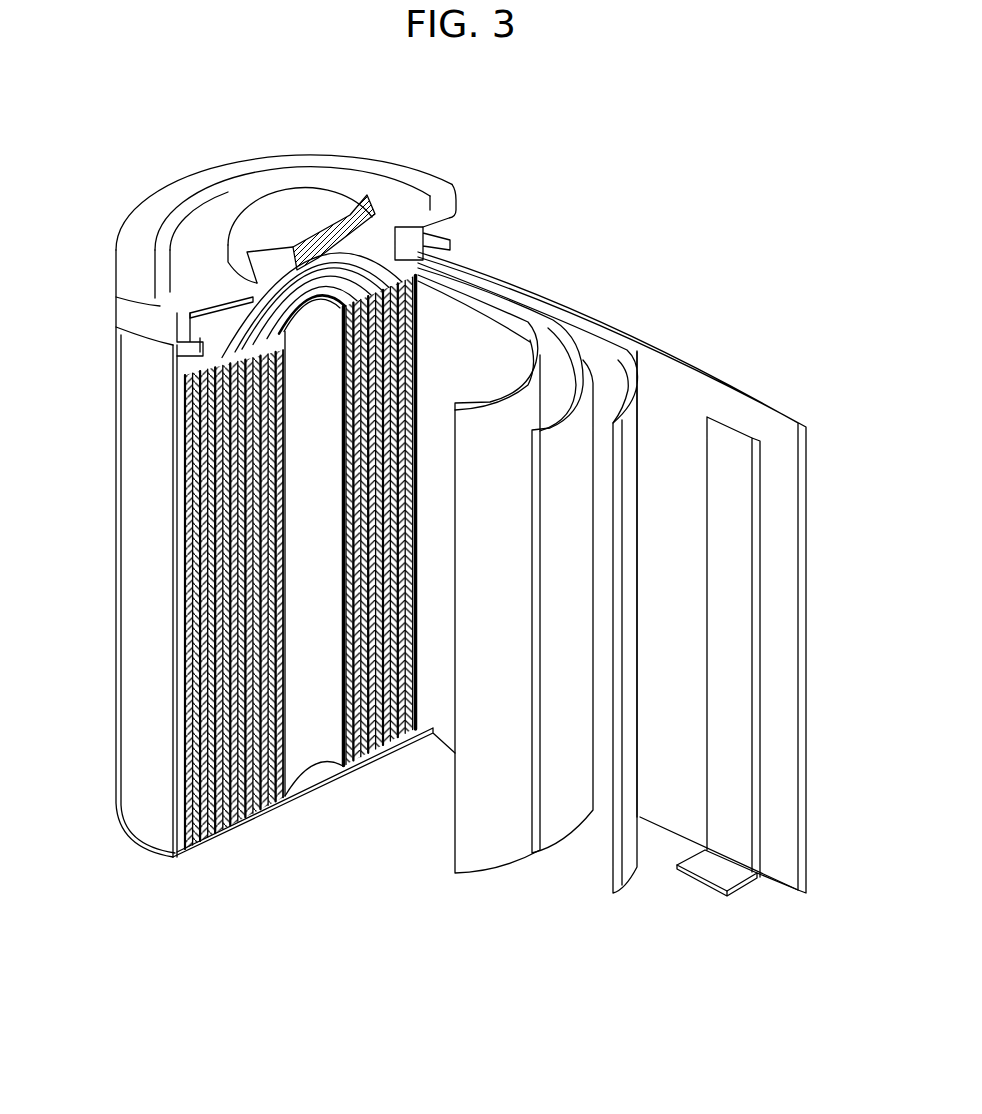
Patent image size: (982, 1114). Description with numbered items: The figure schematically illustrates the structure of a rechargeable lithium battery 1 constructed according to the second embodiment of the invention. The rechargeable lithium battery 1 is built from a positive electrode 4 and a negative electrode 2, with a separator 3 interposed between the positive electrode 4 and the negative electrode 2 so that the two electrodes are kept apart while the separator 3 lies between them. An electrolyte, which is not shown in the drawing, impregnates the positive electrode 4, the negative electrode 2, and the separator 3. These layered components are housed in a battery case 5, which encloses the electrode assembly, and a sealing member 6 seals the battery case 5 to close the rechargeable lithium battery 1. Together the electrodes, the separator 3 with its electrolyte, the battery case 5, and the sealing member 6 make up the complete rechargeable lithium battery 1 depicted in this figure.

The rechargeable lithium battery 1 is at (486, 142).
The negative electrode 2 is at (797, 622).
The separator 3 is at (509, 323).
The positive electrode 4 is at (567, 353).
The battery case 5 is at (124, 556).
The sealing member 6 is at (300, 190).